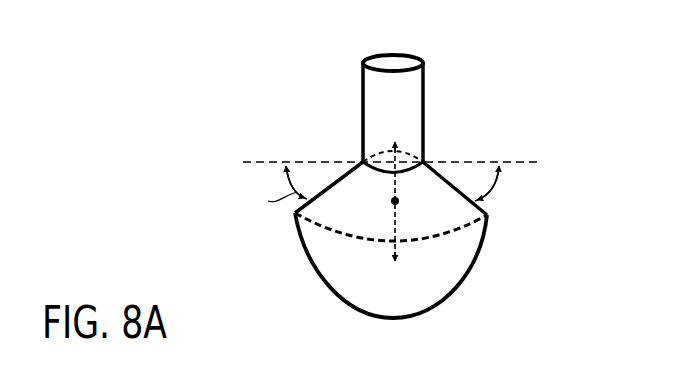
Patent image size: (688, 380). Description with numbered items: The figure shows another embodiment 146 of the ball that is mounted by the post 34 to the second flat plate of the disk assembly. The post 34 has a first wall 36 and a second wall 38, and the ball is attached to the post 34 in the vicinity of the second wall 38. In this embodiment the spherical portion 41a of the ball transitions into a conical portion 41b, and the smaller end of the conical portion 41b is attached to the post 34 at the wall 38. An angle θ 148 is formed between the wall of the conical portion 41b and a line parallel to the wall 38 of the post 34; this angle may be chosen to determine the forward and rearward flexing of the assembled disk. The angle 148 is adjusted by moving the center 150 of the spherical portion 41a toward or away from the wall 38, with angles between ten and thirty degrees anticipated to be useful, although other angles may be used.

The post 34 is at (408, 116).
The first wall 36 is at (396, 62).
The second wall 38 is at (380, 150).
The spherical portion 41a is at (437, 302).
The conical portion 41b is at (443, 212).
The ball embodiment 146 is at (337, 301).
The angle θ 148 is at (493, 188).
The center of spherical portion 150 is at (391, 199).